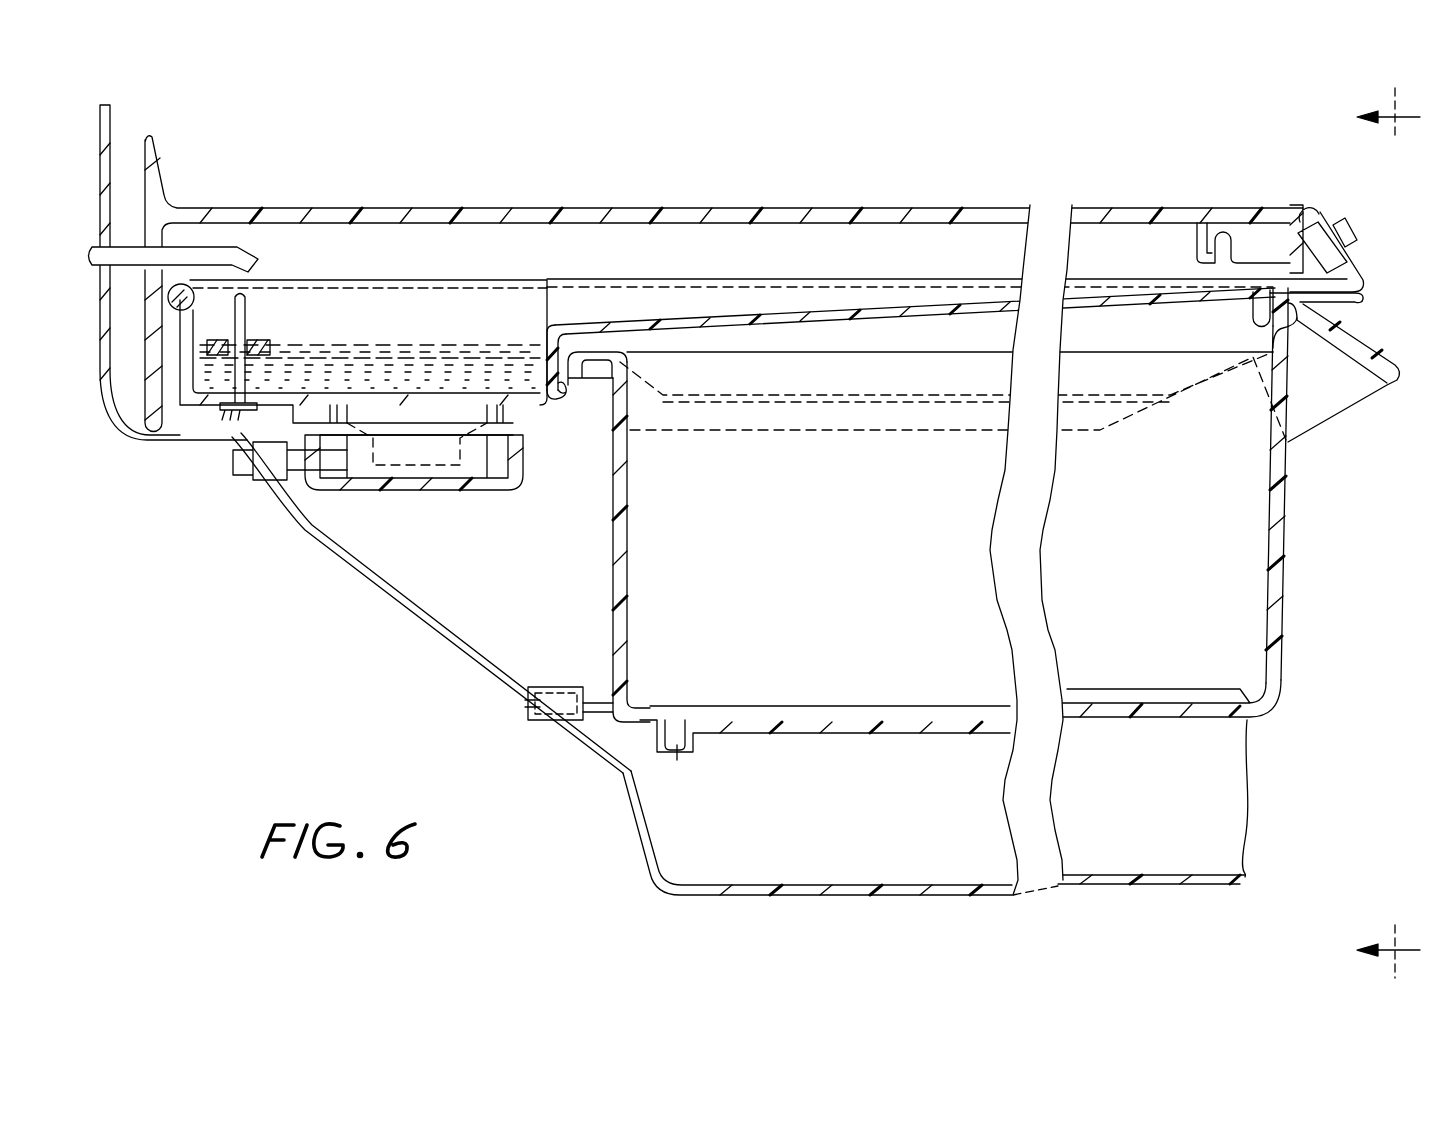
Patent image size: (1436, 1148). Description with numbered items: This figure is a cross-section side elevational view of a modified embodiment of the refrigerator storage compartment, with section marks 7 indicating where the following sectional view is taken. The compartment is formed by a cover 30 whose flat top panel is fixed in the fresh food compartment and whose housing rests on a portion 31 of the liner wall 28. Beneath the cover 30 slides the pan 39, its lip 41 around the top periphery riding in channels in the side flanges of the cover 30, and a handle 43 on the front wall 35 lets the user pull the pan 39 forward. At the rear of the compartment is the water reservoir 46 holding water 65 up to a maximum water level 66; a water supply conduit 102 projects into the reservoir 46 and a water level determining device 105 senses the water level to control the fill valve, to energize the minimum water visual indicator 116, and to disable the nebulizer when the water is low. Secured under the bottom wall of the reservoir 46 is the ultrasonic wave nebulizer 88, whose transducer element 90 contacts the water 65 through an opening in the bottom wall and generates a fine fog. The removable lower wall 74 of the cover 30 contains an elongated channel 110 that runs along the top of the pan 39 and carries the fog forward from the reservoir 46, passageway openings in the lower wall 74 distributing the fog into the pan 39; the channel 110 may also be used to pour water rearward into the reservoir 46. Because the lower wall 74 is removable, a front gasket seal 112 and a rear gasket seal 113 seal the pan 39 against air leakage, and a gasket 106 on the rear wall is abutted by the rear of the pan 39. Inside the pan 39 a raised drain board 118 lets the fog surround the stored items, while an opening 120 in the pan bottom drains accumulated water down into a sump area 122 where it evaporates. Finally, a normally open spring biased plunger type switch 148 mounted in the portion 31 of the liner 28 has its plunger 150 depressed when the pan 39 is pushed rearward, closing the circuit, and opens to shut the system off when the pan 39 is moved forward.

The liner wall 28 is at (97, 372).
The cover 30 is at (877, 207).
The portion of the liner wall 31 is at (472, 662).
The front wall 35 is at (1272, 516).
The pan 39 is at (822, 567).
The lip 41 is at (598, 362).
The handle 43 is at (1399, 382).
The water reservoir 46 is at (428, 325).
The water 65 is at (443, 360).
The maximum water level 66 is at (498, 343).
The lower wall 74 is at (883, 317).
The ultrasonic wave nebulizer 88 is at (383, 506).
The transducer element 90 is at (455, 490).
The water supply conduit 102 is at (120, 247).
The water level determining device 105 is at (262, 324).
The gasket 106 is at (172, 311).
The channel 110 is at (886, 302).
The front gasket seal 112 is at (1366, 303).
The rear gasket seal 113 is at (562, 397).
The minimum water visual indicator 116 is at (1342, 230).
The raised drain board 118 is at (1125, 689).
The opening 120 is at (676, 740).
The sump area 122 is at (740, 885).
The plunger type switch 148 is at (540, 722).
The plunger 150 is at (597, 706).
The section line 7- 7 is at (1388, 537).